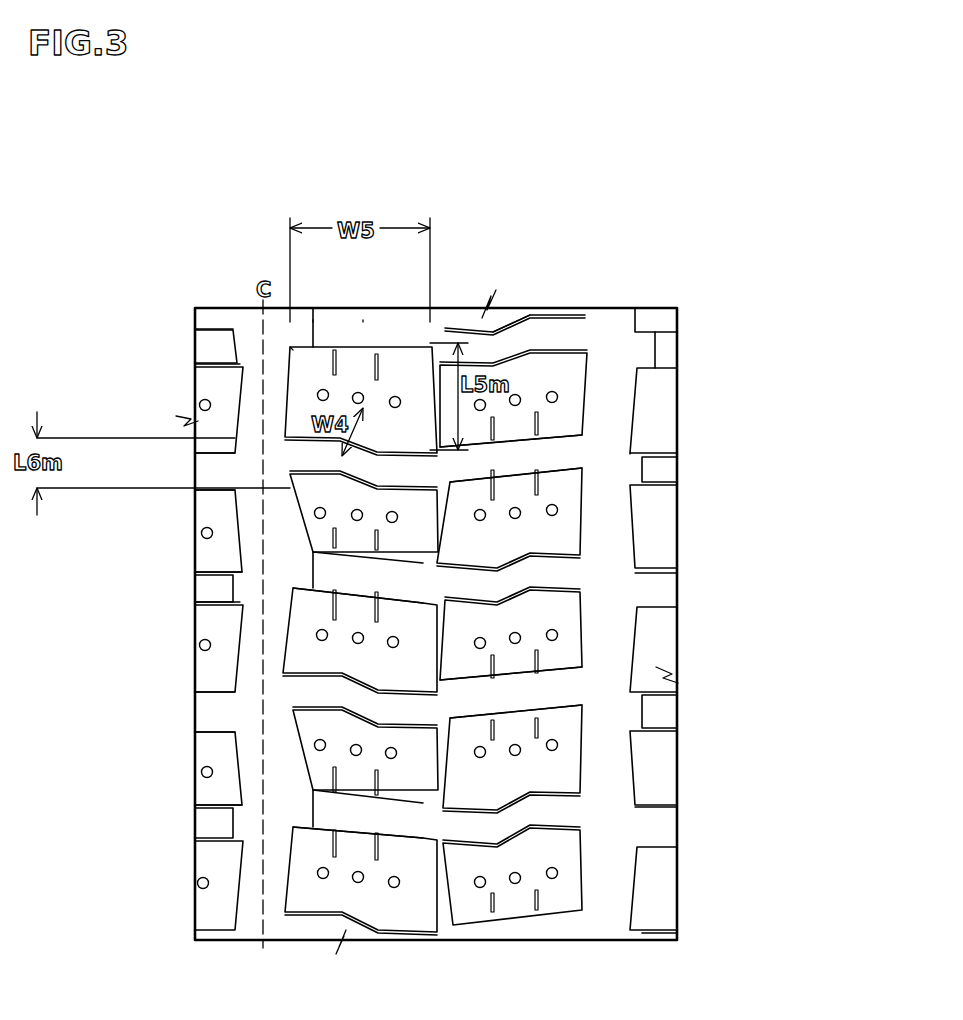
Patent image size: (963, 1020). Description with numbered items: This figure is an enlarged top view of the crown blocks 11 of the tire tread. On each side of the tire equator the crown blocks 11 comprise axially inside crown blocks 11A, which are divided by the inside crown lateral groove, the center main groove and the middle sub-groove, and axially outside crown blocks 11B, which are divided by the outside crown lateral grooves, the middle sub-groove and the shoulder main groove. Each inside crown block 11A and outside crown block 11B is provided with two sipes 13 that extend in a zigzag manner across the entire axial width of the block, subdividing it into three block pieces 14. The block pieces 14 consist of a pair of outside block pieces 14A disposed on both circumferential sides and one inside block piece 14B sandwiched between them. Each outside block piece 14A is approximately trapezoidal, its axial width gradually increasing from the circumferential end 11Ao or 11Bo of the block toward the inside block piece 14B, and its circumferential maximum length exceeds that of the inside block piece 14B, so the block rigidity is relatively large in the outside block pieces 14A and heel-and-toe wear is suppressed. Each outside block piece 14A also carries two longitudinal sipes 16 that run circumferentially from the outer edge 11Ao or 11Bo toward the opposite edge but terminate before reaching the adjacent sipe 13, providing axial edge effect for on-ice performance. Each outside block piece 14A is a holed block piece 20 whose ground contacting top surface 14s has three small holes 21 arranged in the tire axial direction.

The crown block 11 is at (329, 621).
The inside crown block 11A is at (295, 875).
The circumferential end of inside crown block 11Ao is at (298, 312).
The outside crown block 11B is at (546, 371).
The circumferential end of outside crown block 11Bo is at (587, 436).
The sipe 13 is at (338, 323).
The block piece 14 is at (461, 629).
The outside block piece 14A is at (311, 377).
The inside block piece 14B is at (319, 458).
The ground contacting top surface 14s is at (519, 325).
The longitudinal sipe 16 is at (313, 322).
The holed block piece 20 is at (306, 750).
The small hole 21 is at (318, 631).